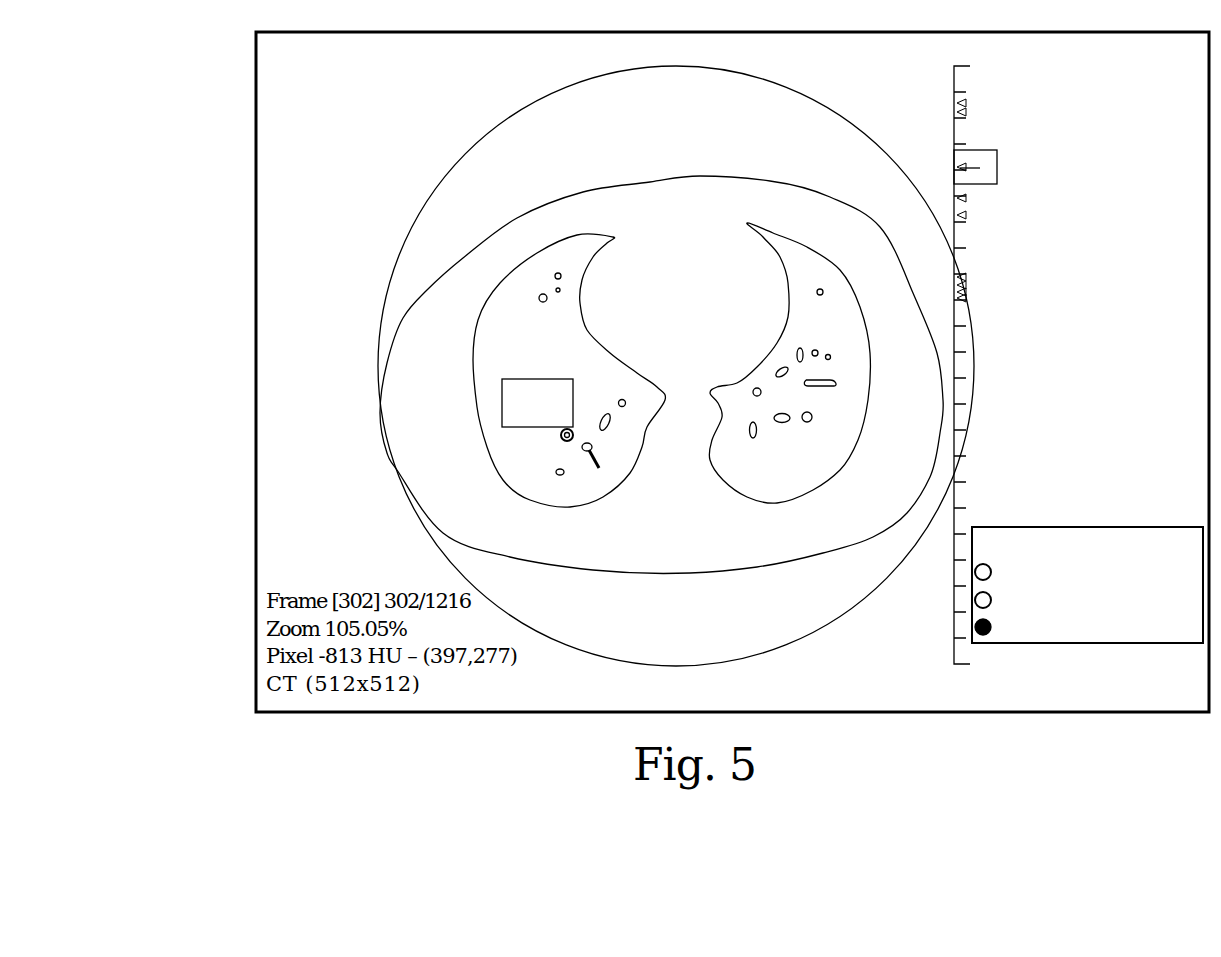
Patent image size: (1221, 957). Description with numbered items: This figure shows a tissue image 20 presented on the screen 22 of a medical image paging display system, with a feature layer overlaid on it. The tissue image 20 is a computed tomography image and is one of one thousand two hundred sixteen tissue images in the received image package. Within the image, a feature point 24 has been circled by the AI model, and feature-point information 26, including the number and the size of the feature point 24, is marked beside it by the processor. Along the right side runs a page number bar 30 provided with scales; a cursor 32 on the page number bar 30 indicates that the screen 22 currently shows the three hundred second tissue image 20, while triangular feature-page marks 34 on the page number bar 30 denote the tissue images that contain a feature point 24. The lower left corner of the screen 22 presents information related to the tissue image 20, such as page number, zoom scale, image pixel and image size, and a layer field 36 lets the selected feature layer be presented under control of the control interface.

The tissue image 20 is at (430, 202).
The screen 22 is at (257, 355).
The feature point 24 is at (560, 438).
The feature-point information 26 is at (502, 392).
The page number bar 30 is at (953, 625).
The cursor 32 is at (998, 168).
The feature-page mark 34 is at (965, 102).
The layer field 36 is at (1087, 528).